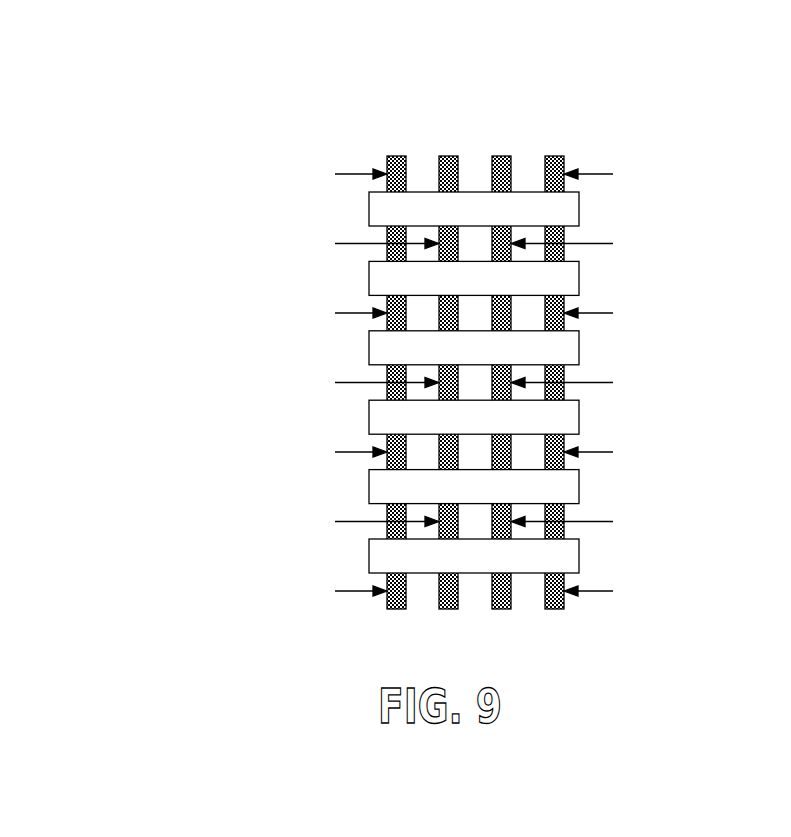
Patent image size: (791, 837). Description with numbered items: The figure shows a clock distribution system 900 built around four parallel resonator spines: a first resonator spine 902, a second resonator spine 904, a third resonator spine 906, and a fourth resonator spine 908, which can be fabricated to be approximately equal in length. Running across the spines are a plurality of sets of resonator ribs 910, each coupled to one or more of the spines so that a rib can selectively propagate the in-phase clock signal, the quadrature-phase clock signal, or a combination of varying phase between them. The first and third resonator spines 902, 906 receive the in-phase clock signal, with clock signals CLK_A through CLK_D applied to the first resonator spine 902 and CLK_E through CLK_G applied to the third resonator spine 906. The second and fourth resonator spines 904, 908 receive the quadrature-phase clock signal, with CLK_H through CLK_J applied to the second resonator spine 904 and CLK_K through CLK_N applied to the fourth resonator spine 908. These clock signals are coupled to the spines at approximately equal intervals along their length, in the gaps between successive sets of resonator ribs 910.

The clock distribution system 900 is at (343, 315).
The first resonator spine 902 is at (395, 156).
The second resonator spine 904 is at (447, 156).
The third resonator spine 906 is at (501, 156).
The fourth resonator spine 908 is at (553, 156).
The sets of resonator ribs 910 is at (369, 209).